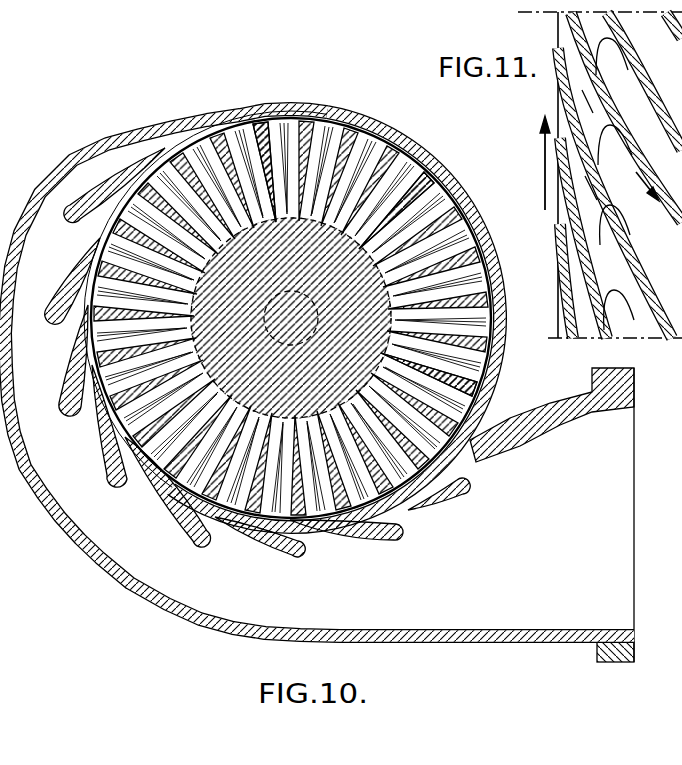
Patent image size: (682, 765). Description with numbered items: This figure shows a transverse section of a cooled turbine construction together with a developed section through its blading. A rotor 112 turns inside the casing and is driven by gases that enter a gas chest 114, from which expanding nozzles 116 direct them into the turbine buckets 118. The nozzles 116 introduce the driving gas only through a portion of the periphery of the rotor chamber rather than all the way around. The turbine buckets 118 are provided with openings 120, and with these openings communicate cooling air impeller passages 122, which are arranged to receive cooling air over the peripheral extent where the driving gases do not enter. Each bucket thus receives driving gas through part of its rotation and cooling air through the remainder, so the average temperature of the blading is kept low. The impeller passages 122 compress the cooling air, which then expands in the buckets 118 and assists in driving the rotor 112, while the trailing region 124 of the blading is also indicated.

In FIG. 10, the rotor 112 is at (291, 318).
In FIG. 11, the rotor 112 is at (560, 220).
In FIG. 10, the gas chest 114 is at (602, 525).
In FIG. 10, the expanding nozzles 116 is at (73, 247).
In FIG. 10, the turbine buckets 118 is at (283, 143).
In FIG. 10, the openings 120 is at (353, 112).
In FIG. 11, the openings 120 is at (608, 40).
In FIG. 10, the cooling air impeller passages 122 is at (389, 219).
In FIG. 11, the cooling air impeller passages 122 is at (566, 110).
In FIG. 10, the blade trailing edge 124 is at (410, 388).